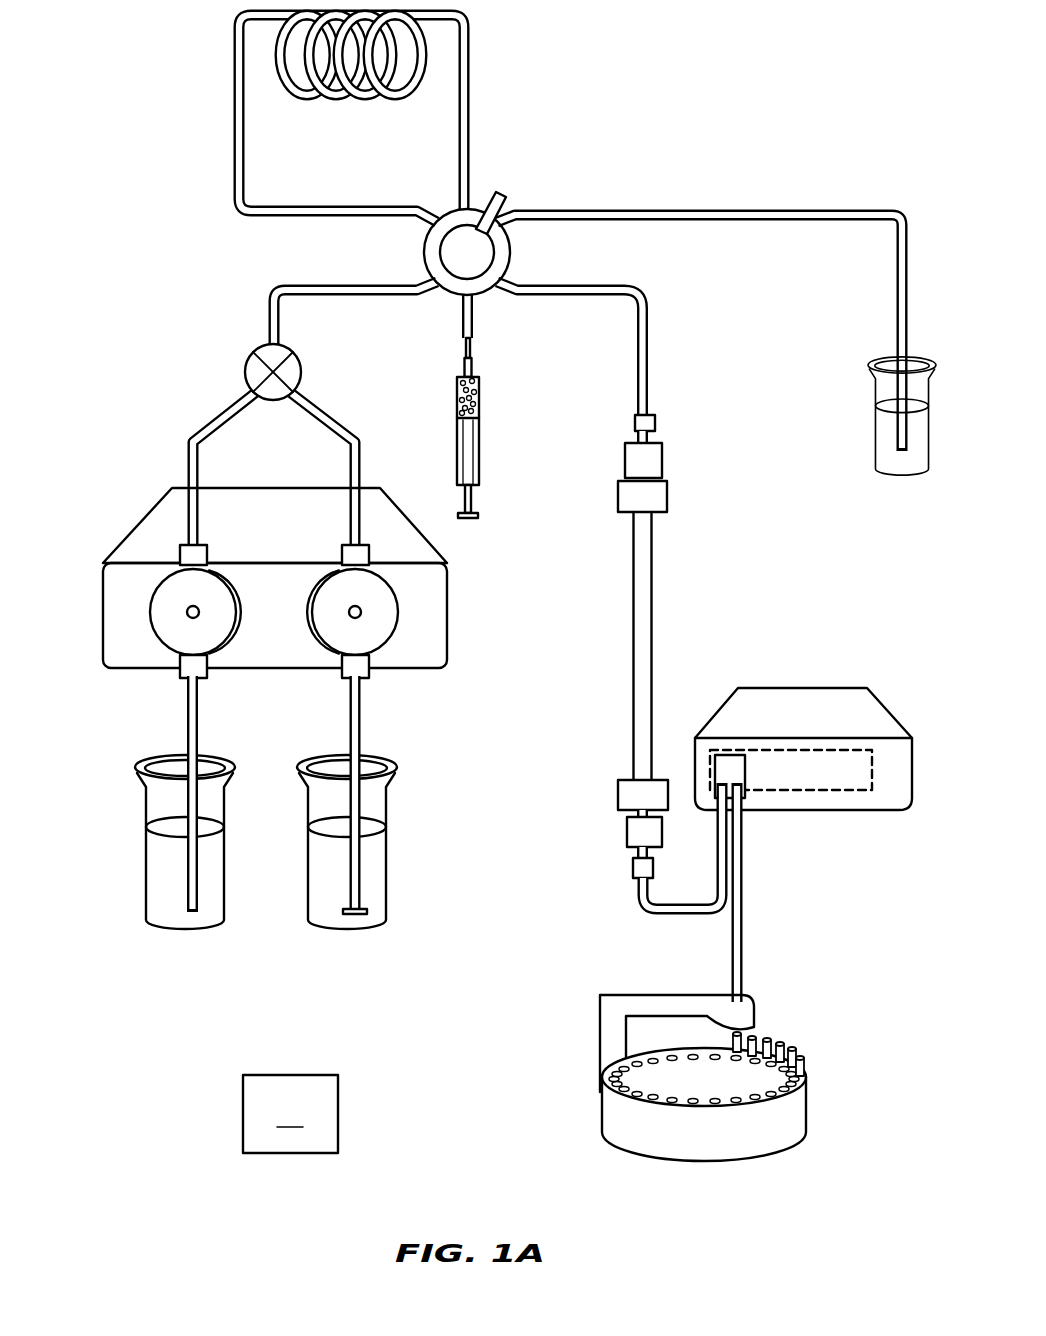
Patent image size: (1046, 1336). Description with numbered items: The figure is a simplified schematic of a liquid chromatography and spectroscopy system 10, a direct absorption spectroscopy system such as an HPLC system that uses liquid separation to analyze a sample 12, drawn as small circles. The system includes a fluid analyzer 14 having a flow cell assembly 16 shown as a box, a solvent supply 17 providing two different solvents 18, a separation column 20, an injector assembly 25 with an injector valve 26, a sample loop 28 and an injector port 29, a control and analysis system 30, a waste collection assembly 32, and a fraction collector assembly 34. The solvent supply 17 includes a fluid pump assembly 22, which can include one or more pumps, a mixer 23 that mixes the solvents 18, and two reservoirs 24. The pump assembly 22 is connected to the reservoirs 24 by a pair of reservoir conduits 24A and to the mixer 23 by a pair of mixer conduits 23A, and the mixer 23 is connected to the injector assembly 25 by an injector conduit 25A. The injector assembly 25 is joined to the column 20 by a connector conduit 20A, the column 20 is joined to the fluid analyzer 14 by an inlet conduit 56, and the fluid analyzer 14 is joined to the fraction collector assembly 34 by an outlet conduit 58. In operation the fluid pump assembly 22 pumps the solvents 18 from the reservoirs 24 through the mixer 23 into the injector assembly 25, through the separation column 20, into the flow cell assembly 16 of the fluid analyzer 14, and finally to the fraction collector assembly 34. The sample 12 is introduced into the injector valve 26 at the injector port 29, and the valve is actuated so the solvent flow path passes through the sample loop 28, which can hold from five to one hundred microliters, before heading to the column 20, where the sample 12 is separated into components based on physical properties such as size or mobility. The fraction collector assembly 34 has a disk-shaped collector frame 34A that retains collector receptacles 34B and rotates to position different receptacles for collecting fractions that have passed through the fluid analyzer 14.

The liquid chromatography and spectroscopy system 10 is at (815, 128).
The sample 12 is at (423, 406).
The fluid analyzer 14 is at (832, 733).
The flow cell assembly 16 is at (872, 770).
The solvent supply 17 is at (243, 573).
The solvent 18 is at (152, 842).
The separation column 20 is at (652, 605).
The connector conduit 20A is at (650, 340).
The fluid pump assembly 22 is at (118, 614).
The mixer 23 is at (246, 380).
The mixer conduits 23A is at (188, 458).
The reservoirs 24 is at (147, 872).
The reservoir conduits 24A is at (187, 722).
The injector assembly 25 is at (425, 243).
The injector conduit 25A is at (268, 300).
The injector valve 26 is at (426, 233).
The sample loop 28 is at (233, 105).
The injector port 29 is at (457, 430).
The control and analysis system 30 is at (290, 1114).
The waste collection assembly 32 is at (875, 432).
The fraction collector assembly 34 is at (710, 1107).
The collector frame 34A is at (720, 1148).
The collector receptacles 34B is at (790, 1095).
The inlet conduit 56 is at (636, 906).
The outlet conduit 58 is at (742, 950).